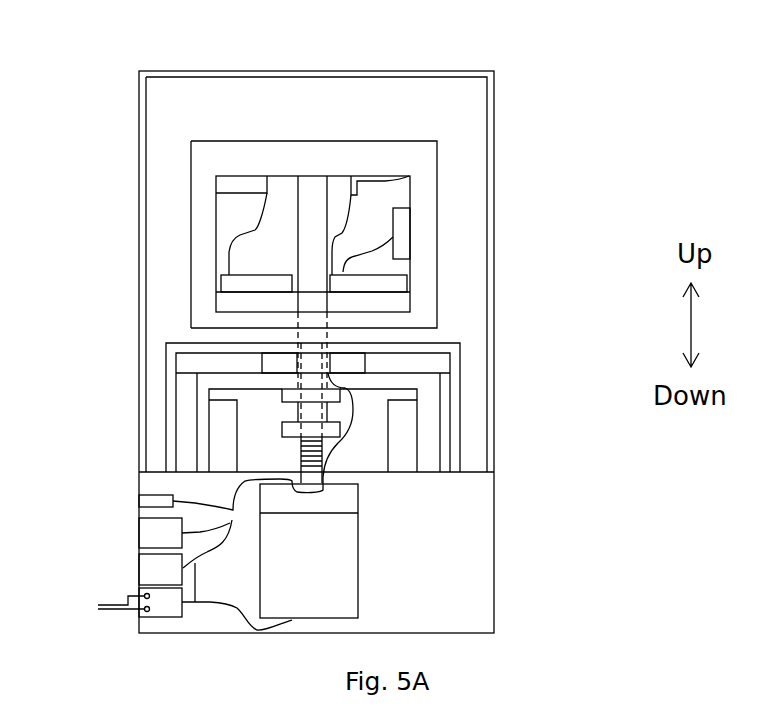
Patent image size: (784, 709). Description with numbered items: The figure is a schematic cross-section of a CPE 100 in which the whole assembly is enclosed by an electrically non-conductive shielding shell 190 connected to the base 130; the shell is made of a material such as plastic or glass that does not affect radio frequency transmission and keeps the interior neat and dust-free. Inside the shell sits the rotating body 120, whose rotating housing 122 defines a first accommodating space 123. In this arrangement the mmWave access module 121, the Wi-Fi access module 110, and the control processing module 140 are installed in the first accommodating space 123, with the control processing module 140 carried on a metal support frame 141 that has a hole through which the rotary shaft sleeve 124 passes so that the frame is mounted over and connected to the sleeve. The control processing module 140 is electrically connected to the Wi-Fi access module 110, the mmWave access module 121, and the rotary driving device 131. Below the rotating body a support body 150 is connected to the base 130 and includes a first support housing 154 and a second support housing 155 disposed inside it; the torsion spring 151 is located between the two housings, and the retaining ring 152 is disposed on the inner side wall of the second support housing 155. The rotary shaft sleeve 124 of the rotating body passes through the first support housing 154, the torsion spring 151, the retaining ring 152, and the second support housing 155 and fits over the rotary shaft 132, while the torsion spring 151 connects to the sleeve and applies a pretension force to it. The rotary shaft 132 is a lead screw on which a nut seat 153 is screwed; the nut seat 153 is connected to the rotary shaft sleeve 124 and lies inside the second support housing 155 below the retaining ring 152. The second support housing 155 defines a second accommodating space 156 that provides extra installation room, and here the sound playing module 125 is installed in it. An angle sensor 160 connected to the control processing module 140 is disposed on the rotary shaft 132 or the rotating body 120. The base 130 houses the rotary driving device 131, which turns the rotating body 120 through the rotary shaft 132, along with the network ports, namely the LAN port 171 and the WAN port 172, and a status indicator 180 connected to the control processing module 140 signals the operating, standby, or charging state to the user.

The CPE 100 is at (503, 124).
The Wi-Fi access module 110 is at (388, 177).
The rotating body 120 is at (438, 193).
The mmWave access module 121 is at (232, 183).
The rotating housing 122 is at (202, 217).
The first accommodating space 123 is at (280, 190).
The rotary shaft sleeve 124 is at (310, 188).
The sound playing module 125 is at (216, 457).
The base 130 is at (462, 542).
The rotary driving device 131 is at (337, 598).
The rotary shaft 132 is at (307, 463).
The control processing module 140 is at (226, 286).
The support frame 141 is at (224, 305).
The support body 150 is at (463, 338).
The torsion spring 151 is at (348, 362).
The retaining ring 152 is at (285, 395).
The nut seat 153 is at (285, 430).
The first support housing 154 is at (455, 380).
The second support housing 155 is at (427, 424).
The second accommodating space 156 is at (370, 400).
The angle sensor 160 is at (287, 333).
The LAN port 171 is at (147, 538).
The WAN port 172 is at (147, 572).
The status indicator 180 is at (147, 502).
The electrically non-conductive shielding shell 190 is at (142, 110).